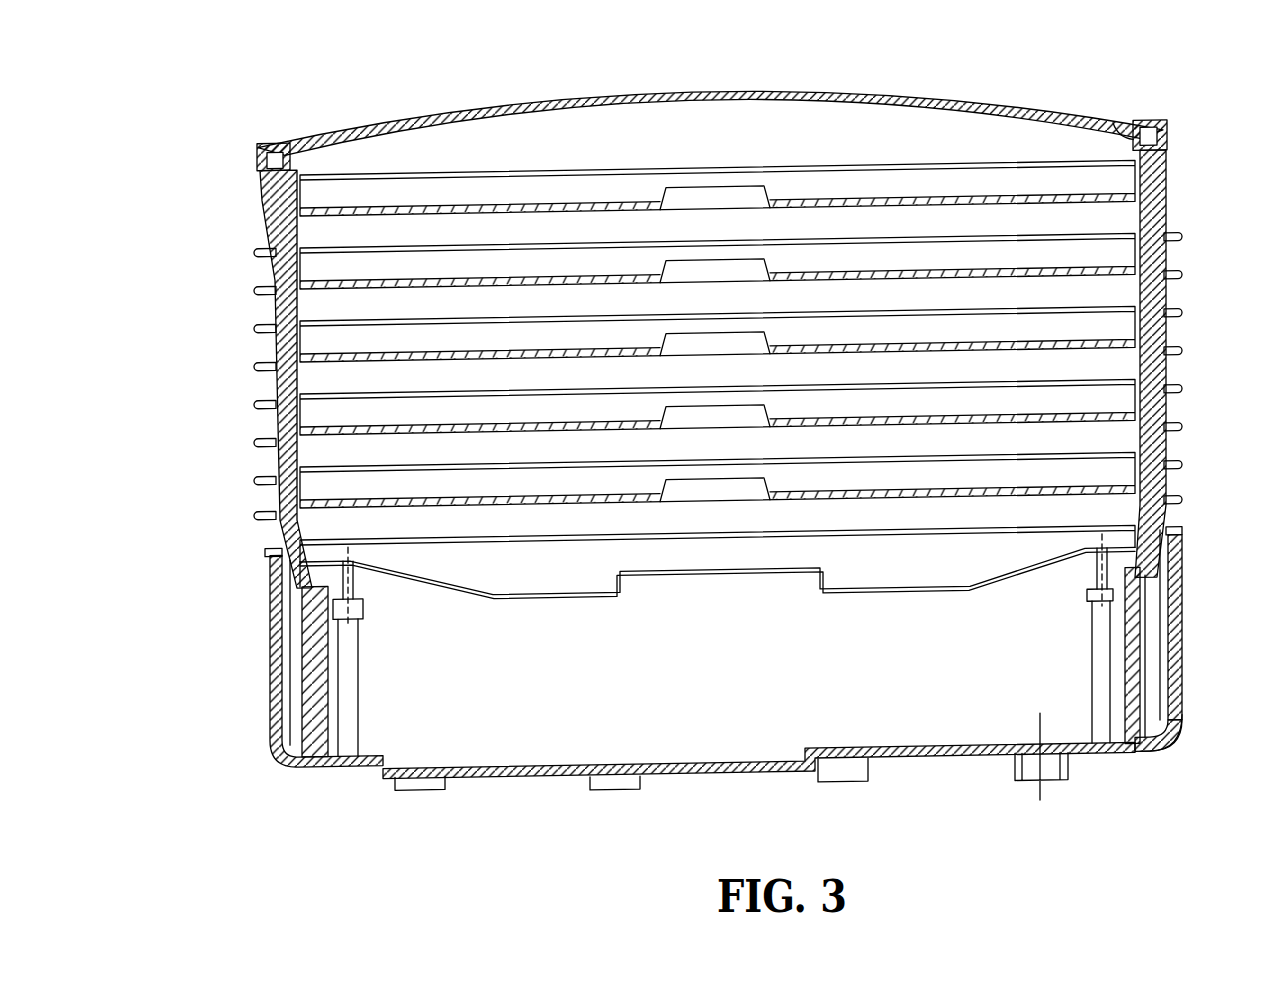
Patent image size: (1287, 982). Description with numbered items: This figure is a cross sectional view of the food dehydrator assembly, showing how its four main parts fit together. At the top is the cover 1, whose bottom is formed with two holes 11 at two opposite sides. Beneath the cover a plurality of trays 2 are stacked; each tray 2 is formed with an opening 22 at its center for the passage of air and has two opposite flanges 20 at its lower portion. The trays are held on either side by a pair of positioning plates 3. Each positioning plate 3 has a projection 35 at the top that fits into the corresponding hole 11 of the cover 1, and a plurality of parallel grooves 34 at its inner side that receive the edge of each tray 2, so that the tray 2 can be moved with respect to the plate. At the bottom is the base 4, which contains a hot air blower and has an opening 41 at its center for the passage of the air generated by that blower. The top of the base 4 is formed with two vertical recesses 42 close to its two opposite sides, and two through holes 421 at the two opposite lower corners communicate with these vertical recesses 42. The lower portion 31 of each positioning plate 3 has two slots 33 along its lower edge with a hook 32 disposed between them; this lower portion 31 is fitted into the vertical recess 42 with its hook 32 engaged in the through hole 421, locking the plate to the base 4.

The cover 1 is at (832, 93).
The tray 2 is at (440, 195).
The opening 22 is at (705, 200).
The positioning plate 3 is at (272, 348).
The parallel grooves 34 is at (1157, 208).
The projection 35 is at (1113, 122).
The hole 11 is at (1167, 140).
The flange 20 is at (265, 185).
The base 4 is at (953, 767).
The opening 41 is at (745, 580).
The vertical recess 42 is at (1173, 548).
The lower portion 31 is at (1180, 583).
The slot 33 is at (1173, 663).
The hook 32 is at (1182, 713).
The through hole 421 is at (1180, 730).